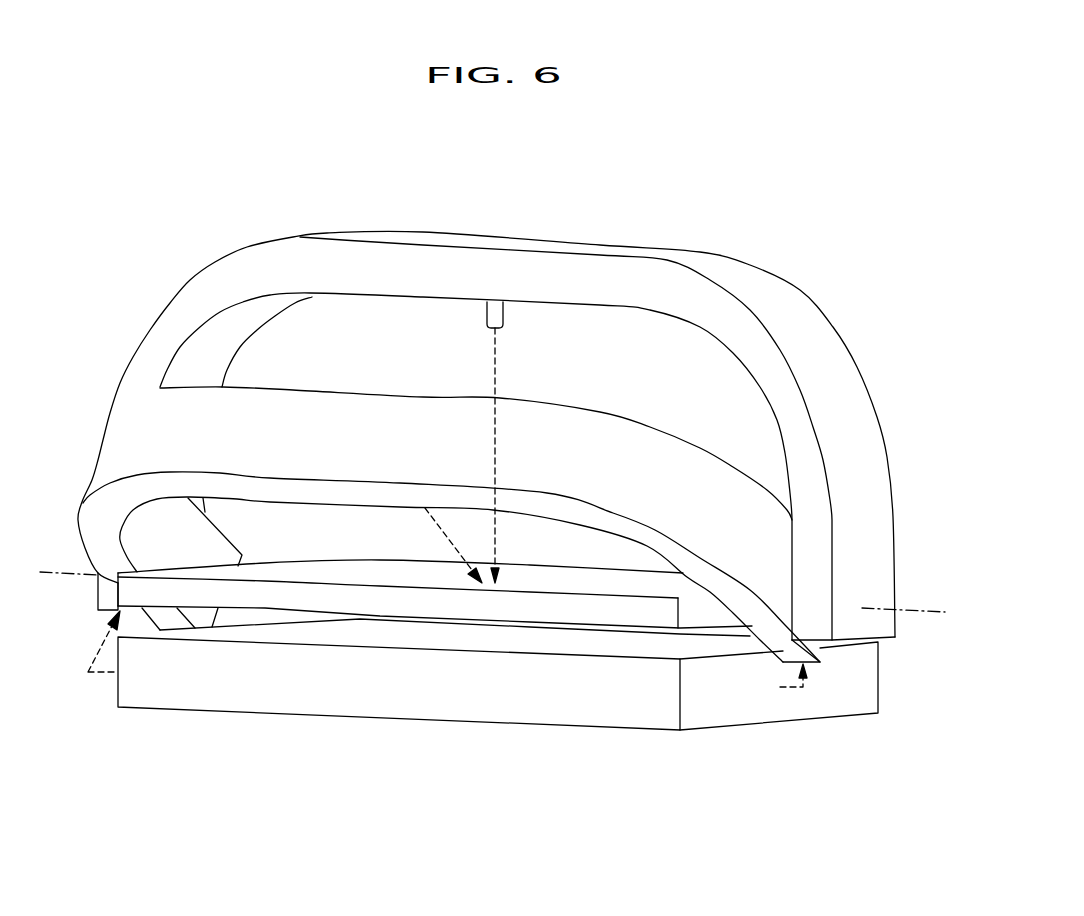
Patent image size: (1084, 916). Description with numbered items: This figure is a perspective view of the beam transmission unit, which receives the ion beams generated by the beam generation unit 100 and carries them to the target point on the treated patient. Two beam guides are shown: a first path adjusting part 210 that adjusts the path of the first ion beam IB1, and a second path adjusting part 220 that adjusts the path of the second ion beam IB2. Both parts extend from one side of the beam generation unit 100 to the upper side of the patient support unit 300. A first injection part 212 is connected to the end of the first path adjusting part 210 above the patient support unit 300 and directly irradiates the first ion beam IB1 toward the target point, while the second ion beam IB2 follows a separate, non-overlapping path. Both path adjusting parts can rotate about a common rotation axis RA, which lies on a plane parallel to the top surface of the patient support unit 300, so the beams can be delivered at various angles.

The beam generation unit 100 is at (400, 708).
The first path adjusting part 210 is at (725, 303).
The first injection part 212 is at (503, 313).
The second path adjusting part 220 is at (138, 407).
The patient support unit 300 is at (258, 573).
The first ion beam IB1 is at (497, 362).
The second ion beam IB2 is at (446, 533).
The rotation axis RA is at (913, 610).